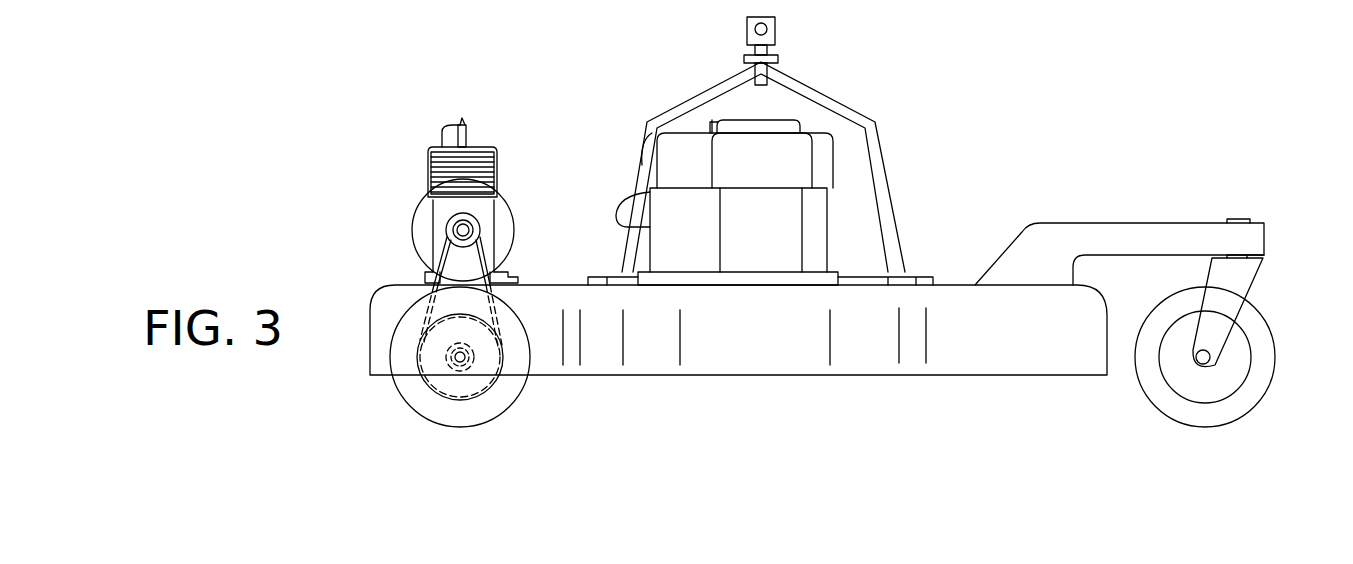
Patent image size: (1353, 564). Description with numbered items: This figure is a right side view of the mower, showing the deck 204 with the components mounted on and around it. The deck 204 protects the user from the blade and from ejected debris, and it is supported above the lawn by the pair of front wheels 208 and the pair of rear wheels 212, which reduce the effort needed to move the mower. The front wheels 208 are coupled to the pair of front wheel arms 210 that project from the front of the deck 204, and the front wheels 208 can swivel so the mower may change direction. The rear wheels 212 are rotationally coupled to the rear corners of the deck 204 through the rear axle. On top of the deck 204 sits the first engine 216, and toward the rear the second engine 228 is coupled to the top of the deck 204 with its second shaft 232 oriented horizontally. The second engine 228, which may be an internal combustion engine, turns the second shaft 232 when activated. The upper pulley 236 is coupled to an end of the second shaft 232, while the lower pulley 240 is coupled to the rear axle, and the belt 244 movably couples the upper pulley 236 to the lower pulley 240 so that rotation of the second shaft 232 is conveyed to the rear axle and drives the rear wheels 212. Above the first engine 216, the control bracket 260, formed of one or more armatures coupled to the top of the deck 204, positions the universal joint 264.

The deck 204 is at (937, 353).
The pair of front wheels 208 is at (1262, 322).
The pair of front wheel arms 210 is at (1058, 233).
The pair of rear wheels 212 is at (425, 393).
The first engine 216 is at (818, 230).
The second engine 228 is at (418, 218).
The second shaft 232 is at (463, 237).
The upper pulley 236 is at (482, 225).
The lower pulley 240 is at (497, 378).
The belt 244 is at (430, 315).
The control bracket 260 is at (813, 88).
The universal joint 264 is at (763, 28).